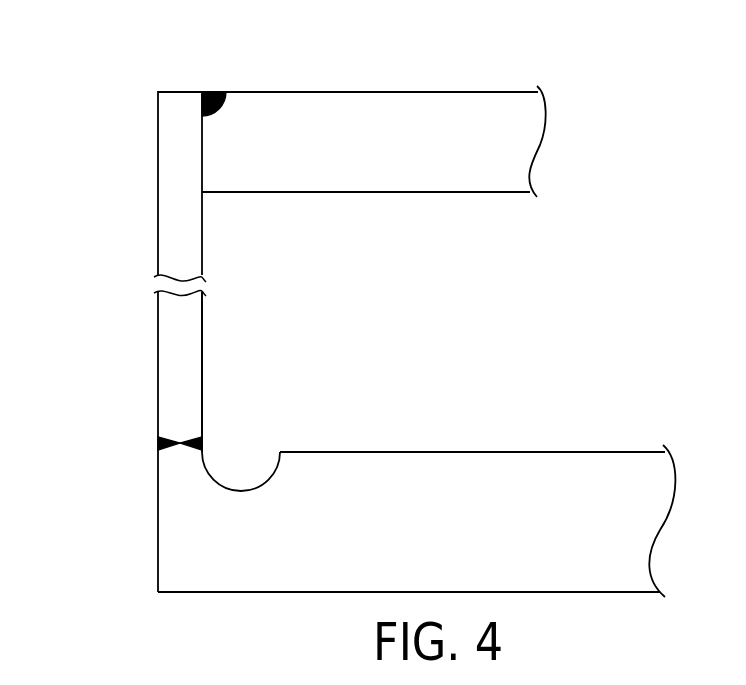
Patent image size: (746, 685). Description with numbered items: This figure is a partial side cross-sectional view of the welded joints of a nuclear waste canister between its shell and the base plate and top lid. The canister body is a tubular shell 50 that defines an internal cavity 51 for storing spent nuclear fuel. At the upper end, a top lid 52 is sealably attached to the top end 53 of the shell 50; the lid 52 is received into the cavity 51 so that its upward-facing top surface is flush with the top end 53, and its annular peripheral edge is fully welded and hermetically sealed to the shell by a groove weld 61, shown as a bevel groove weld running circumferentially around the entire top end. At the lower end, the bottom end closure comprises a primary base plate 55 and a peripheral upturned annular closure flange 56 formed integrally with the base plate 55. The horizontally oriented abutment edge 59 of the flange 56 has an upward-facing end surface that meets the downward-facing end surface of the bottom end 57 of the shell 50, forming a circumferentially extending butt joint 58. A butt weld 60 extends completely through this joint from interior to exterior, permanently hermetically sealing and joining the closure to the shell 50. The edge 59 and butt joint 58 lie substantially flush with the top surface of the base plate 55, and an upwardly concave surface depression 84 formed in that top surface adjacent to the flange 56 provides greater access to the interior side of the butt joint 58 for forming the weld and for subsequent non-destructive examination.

The tubular shell 50 is at (158, 240).
The internal cavity 51 is at (207, 348).
The top lid 52 is at (302, 178).
The top end 53 is at (178, 92).
The primary base plate 55 is at (477, 488).
The annular closure flange 56 is at (163, 466).
The bottom end 57 is at (170, 438).
The butt joint 58 is at (210, 436).
The abutment edge 59 is at (188, 452).
The butt weld 60 is at (160, 443).
The groove weld 61 is at (213, 92).
The surface depression 84 is at (242, 492).